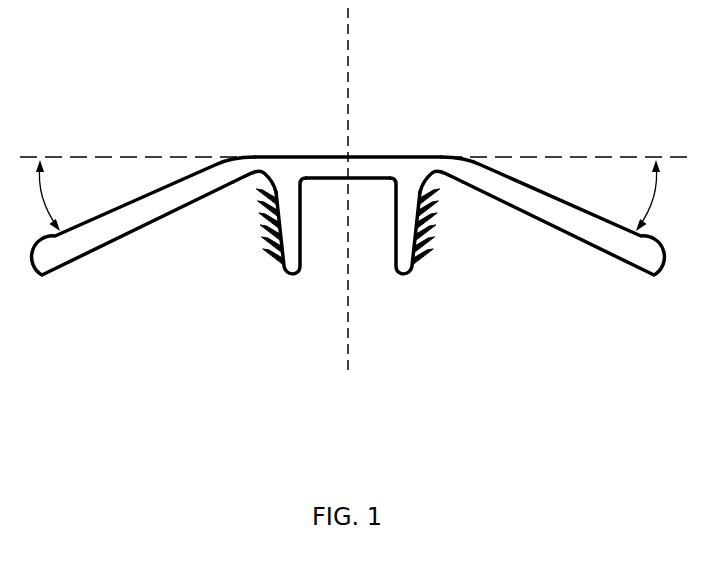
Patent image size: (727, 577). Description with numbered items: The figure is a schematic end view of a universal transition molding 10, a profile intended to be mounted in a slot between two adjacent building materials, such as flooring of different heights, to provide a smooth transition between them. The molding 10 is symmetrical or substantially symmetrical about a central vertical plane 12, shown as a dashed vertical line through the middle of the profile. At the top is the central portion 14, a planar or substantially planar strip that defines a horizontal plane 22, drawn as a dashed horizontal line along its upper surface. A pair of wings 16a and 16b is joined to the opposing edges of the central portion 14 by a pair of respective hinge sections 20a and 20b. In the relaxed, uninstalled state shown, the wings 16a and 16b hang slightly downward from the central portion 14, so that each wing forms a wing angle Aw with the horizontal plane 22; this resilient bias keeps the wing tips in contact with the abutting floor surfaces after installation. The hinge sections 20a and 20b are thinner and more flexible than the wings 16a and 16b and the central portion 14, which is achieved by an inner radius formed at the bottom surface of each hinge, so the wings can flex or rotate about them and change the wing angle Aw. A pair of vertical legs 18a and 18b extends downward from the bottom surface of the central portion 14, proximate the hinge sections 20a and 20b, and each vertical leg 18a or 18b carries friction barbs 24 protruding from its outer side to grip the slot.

The universal transition molding 10 is at (348, 169).
The central vertical plane 12 is at (350, 66).
The central portion 14 is at (328, 156).
The wing 16a is at (117, 228).
The wing 16b is at (579, 228).
The vertical leg 18a is at (287, 275).
The vertical leg 18b is at (409, 275).
The hinge section 20a is at (253, 156).
The hinge section 20b is at (443, 156).
The horizontal plane 22 is at (78, 157).
The friction barbs 24 is at (266, 227).
The wing angle Aw is at (349, 195).